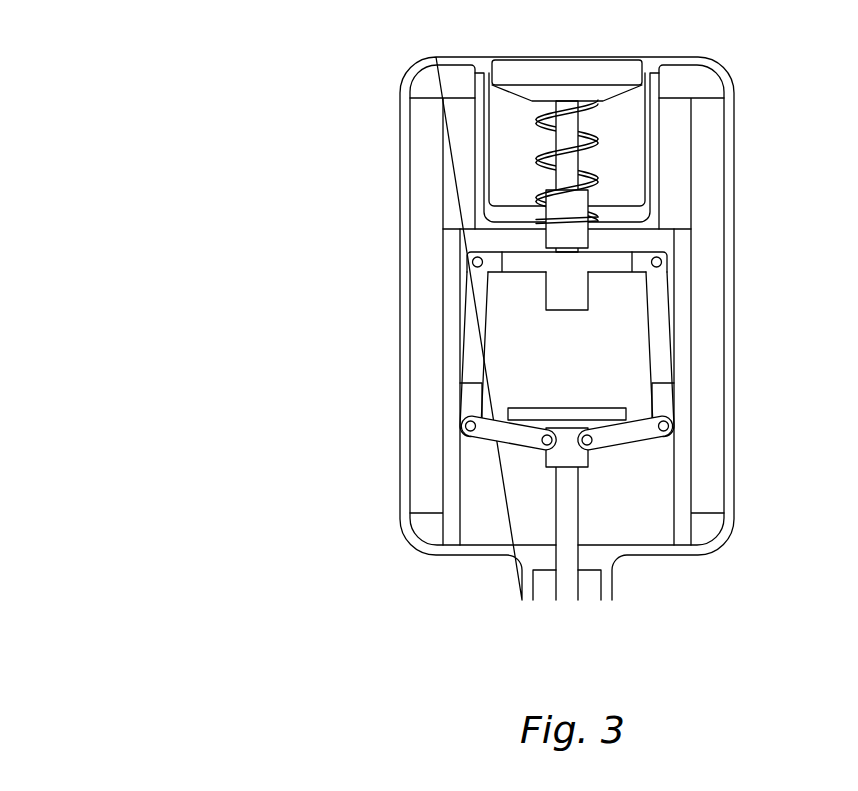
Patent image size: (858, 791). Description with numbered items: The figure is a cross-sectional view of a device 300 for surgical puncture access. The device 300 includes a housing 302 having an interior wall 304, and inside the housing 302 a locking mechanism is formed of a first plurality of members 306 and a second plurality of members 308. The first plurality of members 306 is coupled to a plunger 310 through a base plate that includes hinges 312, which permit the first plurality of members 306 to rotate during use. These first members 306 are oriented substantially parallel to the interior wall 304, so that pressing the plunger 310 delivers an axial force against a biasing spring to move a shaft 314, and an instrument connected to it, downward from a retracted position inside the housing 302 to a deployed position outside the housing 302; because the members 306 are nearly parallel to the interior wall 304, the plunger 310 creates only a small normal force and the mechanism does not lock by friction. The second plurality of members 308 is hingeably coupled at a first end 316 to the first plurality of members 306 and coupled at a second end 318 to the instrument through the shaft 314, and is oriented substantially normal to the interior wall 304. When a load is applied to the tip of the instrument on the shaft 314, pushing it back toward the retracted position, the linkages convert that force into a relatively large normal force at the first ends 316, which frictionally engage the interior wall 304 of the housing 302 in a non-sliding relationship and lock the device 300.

The device 300 is at (223, 185).
The housing 302 is at (400, 385).
The interior wall 304 is at (675, 480).
The first plurality of members 306 is at (488, 300).
The second plurality of members 308 is at (638, 418).
The plunger 310 is at (566, 59).
The hinge 312 is at (657, 263).
The shaft 314 is at (580, 528).
The first end 316 is at (483, 447).
The second end 318 is at (528, 447).